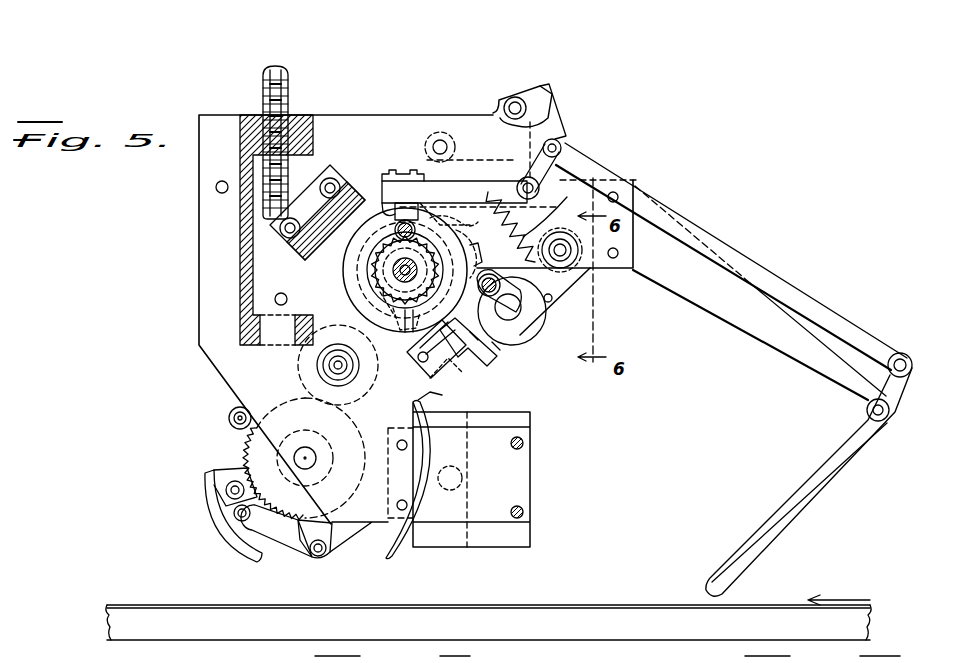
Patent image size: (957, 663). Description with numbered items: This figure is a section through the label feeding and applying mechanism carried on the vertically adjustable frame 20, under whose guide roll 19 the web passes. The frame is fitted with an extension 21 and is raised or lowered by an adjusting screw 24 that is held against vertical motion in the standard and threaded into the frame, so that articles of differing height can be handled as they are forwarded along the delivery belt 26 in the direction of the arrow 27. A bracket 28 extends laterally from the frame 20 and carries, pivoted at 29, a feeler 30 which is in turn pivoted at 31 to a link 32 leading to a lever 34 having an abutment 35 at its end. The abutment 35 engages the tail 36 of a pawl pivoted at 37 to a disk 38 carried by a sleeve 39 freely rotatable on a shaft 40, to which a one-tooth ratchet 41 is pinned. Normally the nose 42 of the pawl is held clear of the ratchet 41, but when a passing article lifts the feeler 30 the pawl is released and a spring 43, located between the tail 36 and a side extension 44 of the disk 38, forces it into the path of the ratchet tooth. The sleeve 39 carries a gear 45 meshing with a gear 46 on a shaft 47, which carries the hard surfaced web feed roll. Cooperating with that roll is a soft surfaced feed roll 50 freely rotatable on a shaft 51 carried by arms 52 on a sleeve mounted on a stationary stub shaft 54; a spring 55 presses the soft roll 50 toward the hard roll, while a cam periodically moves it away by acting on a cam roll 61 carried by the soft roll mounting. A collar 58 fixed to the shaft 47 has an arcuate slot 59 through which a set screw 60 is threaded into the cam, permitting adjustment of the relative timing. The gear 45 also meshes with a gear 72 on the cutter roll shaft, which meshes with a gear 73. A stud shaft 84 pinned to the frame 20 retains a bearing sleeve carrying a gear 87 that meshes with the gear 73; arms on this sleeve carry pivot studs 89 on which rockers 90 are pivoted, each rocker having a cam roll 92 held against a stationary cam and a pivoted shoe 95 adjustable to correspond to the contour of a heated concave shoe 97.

The guide roll 19 is at (455, 130).
The frame 20 is at (583, 182).
The extension 21 is at (240, 222).
The adjusting screw 24 is at (264, 94).
The delivery belt 26 is at (582, 605).
The arrow 27 is at (839, 586).
The bracket 28 is at (748, 328).
The pivot 29 is at (889, 410).
The feeler 30 is at (718, 578).
The pivot 31 is at (910, 360).
The link 32 is at (832, 316).
The lever 34 is at (452, 177).
The abutment 35 is at (380, 195).
The tail 36 is at (404, 203).
The pivot 37 is at (471, 188).
The disk 38 is at (347, 274).
The sleeve 39 is at (392, 305).
The shaft 40 is at (420, 300).
The one-tooth ratchet 41 is at (352, 294).
The nose 42 is at (350, 262).
The spring 43 is at (418, 224).
The side extension 44 is at (454, 215).
The gear 45 is at (348, 342).
The gear 46 is at (508, 221).
The shaft 47 is at (517, 190).
The soft surfaced feed roll 50 is at (540, 332).
The shaft 51 is at (512, 322).
The arms 52 is at (552, 299).
The stationary stub shaft 54 is at (560, 248).
The spring 55 is at (552, 240).
The collar 58 is at (485, 254).
The arcuate slot 59 is at (470, 342).
The set screw 60 is at (502, 292).
The cam roll 61 is at (490, 360).
The gear 72 is at (412, 372).
The gear 73 is at (415, 404).
The stud shaft 84 is at (312, 466).
The gear 87 is at (290, 408).
The pivot studs 89 is at (328, 552).
The rockers 90 is at (292, 542).
The cam roll 92 is at (228, 424).
The shoe 95 is at (220, 528).
The concave shoe 97 is at (397, 545).